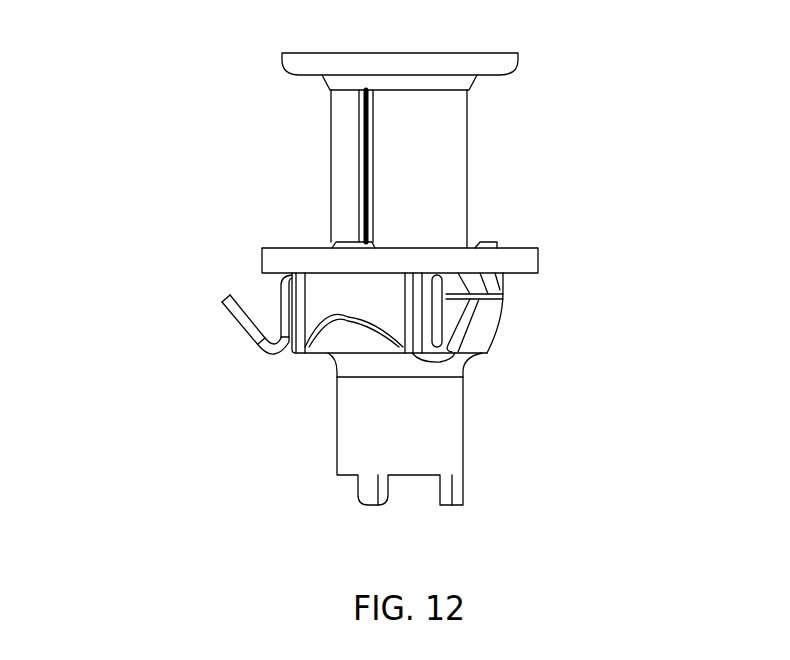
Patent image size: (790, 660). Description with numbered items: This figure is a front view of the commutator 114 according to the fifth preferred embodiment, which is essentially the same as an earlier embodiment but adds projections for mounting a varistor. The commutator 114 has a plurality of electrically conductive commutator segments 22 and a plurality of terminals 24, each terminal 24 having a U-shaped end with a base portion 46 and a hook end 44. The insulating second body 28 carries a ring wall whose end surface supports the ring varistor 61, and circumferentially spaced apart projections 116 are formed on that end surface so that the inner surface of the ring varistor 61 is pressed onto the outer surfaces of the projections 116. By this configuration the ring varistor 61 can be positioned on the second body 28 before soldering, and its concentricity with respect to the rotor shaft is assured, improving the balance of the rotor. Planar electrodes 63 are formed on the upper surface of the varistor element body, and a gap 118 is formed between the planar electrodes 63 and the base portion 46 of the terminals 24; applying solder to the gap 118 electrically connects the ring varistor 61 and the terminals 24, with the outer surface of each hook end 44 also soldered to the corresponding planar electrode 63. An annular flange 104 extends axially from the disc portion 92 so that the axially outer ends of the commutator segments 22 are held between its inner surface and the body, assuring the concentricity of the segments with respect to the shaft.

The commutator 114 is at (371, 260).
The head cap 92 is at (494, 66).
The annular flange 104 is at (462, 82).
The commutator segments 22 is at (340, 136).
The ring varistor 61 is at (282, 247).
The projections 116 is at (487, 240).
The planar electrodes 63 is at (510, 277).
The gap 118 is at (512, 302).
The base portion 46 is at (513, 320).
The terminals 24 is at (487, 330).
The second body 28 is at (440, 422).
The hook end 44 is at (233, 321).